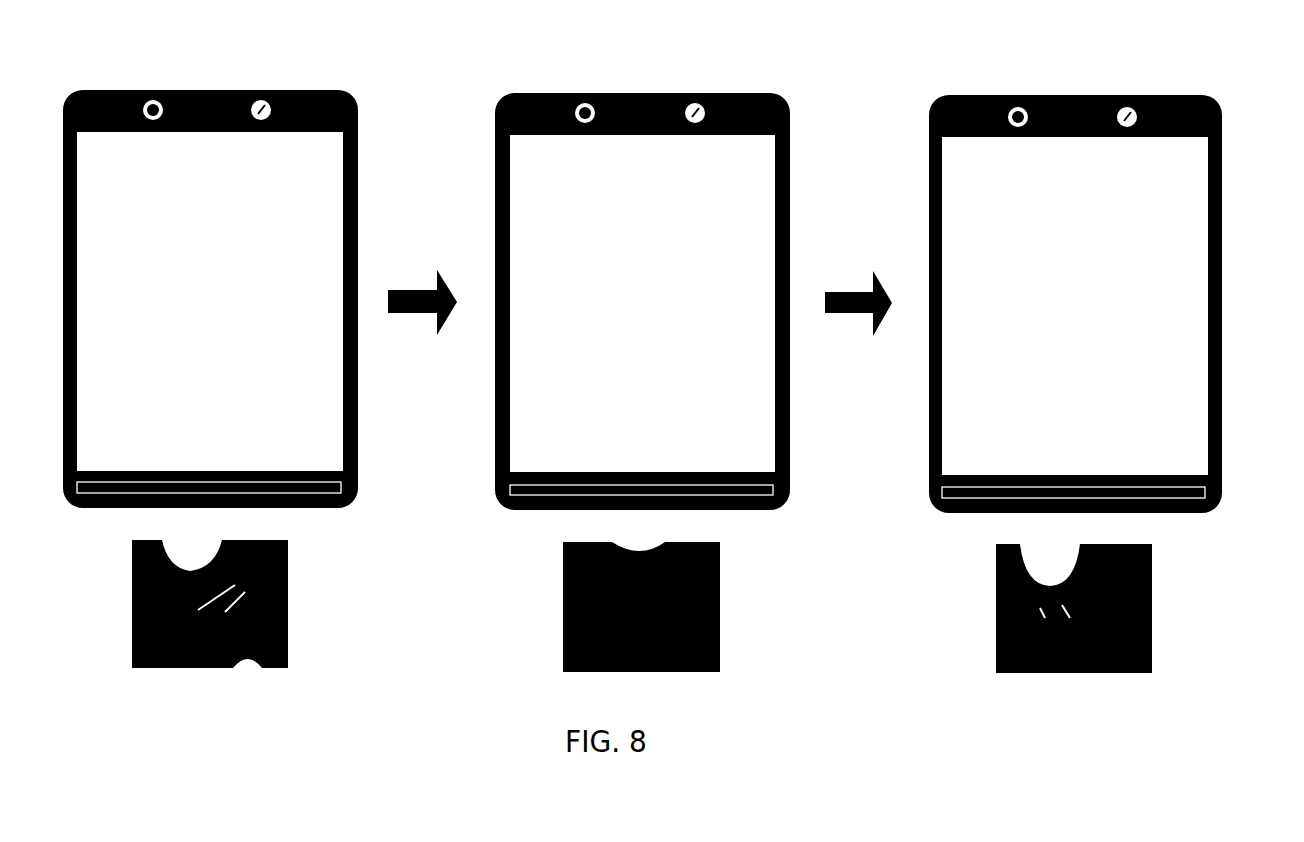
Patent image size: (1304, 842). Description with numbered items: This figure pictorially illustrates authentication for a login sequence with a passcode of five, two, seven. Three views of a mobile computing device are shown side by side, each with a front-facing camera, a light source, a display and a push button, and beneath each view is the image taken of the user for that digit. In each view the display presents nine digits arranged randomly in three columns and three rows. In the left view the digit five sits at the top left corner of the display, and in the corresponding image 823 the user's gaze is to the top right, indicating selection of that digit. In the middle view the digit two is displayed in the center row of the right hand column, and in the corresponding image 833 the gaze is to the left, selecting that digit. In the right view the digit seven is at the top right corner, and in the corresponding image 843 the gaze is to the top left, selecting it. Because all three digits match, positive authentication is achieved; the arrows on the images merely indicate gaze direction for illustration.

The image 823 is at (288, 602).
The image 833 is at (710, 598).
The image 843 is at (1138, 602).